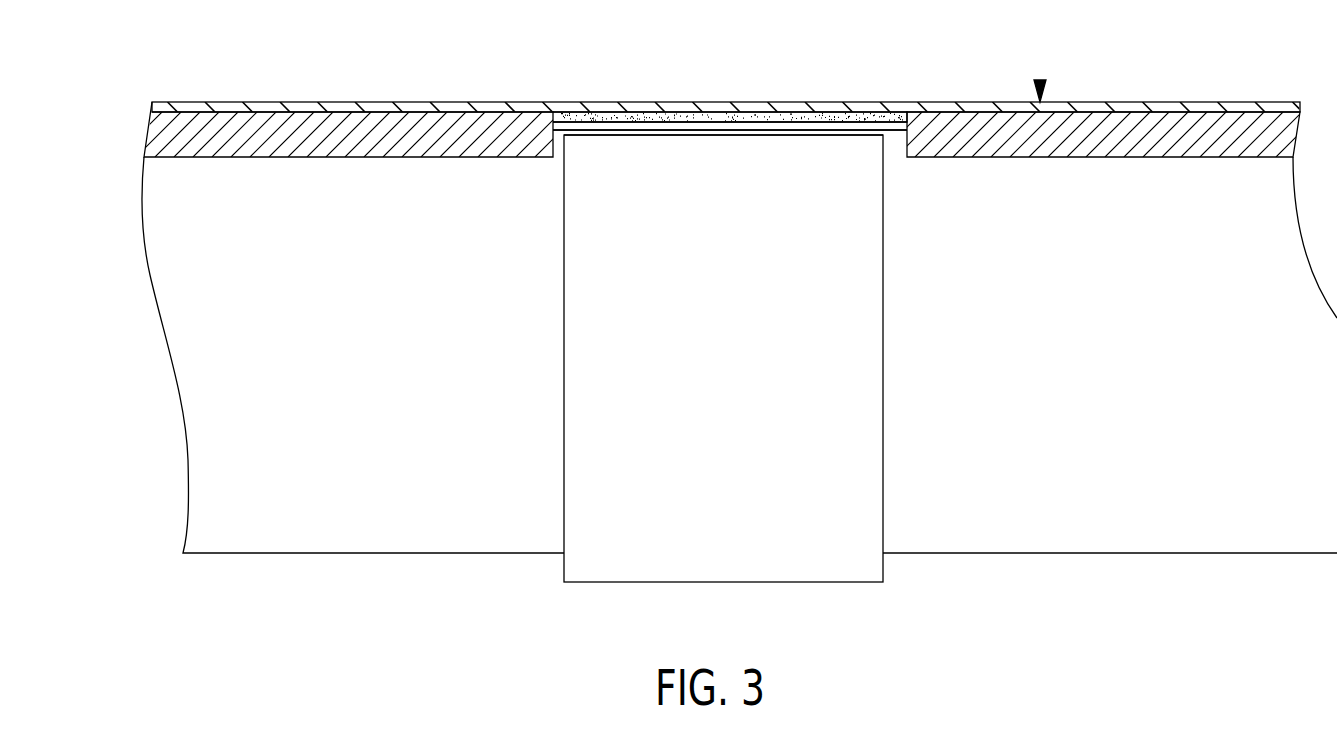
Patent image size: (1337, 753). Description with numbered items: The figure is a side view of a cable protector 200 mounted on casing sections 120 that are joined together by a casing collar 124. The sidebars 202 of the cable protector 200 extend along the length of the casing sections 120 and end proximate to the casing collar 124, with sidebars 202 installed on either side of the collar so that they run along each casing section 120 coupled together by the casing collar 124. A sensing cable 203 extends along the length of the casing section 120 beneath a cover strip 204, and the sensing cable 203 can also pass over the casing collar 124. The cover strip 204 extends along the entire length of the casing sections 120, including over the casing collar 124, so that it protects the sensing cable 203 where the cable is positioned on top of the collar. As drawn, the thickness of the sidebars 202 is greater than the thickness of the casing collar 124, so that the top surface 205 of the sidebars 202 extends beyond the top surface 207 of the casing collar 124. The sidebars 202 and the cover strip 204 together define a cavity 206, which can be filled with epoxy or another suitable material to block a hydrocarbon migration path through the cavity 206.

The casing sections 120 is at (408, 538).
The casing collar 124 is at (834, 576).
The cable protector 200 is at (1040, 80).
The sidebars 202 is at (493, 120).
The sensing cable 203 is at (730, 123).
The cover strip 204 is at (860, 108).
The top surface of the sidebars 205 is at (230, 112).
The cavity 206 is at (902, 119).
The top surface of the casing collar 207 is at (636, 132).